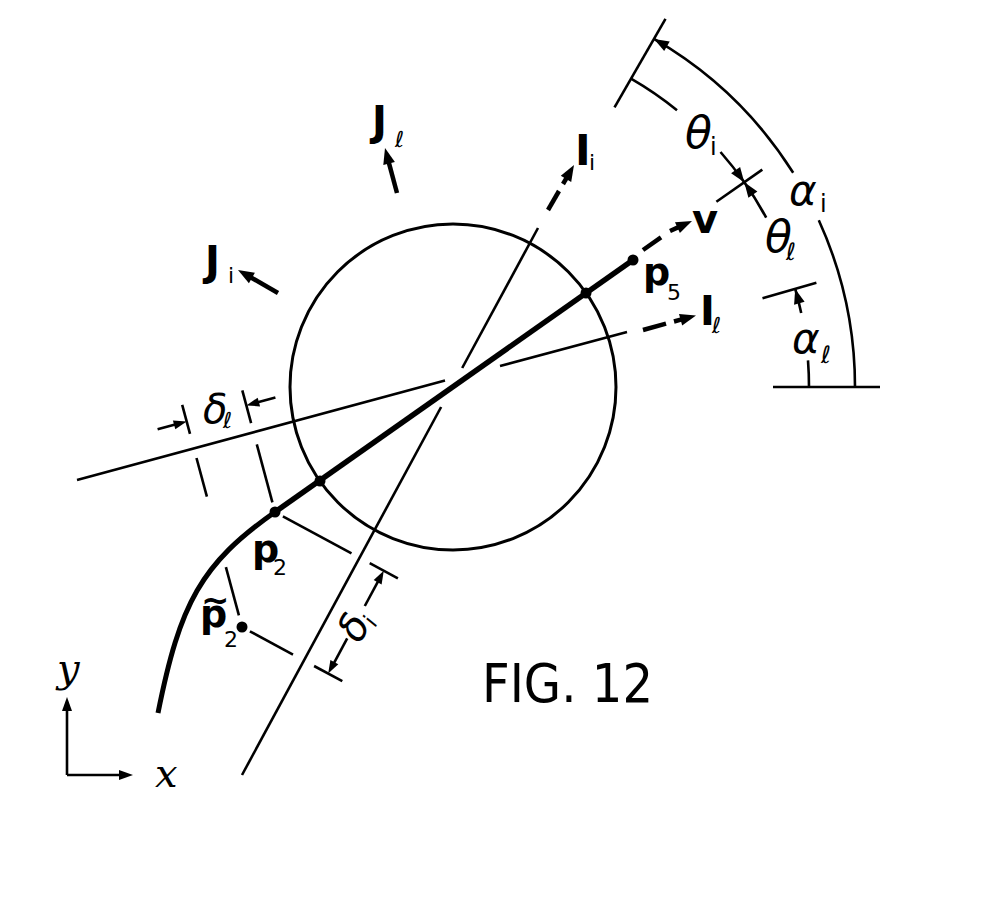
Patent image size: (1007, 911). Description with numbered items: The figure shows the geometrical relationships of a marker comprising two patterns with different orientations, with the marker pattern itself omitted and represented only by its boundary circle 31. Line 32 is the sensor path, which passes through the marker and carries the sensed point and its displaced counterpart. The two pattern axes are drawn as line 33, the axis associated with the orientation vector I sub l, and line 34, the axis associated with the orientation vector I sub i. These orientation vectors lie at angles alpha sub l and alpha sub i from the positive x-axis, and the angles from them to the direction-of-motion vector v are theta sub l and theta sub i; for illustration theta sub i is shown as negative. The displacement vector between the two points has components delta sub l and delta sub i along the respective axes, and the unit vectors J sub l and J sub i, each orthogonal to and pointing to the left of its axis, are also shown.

The boundary circle 31 is at (340, 268).
The sensor path 32 is at (180, 620).
The pattern axis line for I_l 33 is at (105, 472).
The pattern axis line for I_i 34 is at (481, 333).